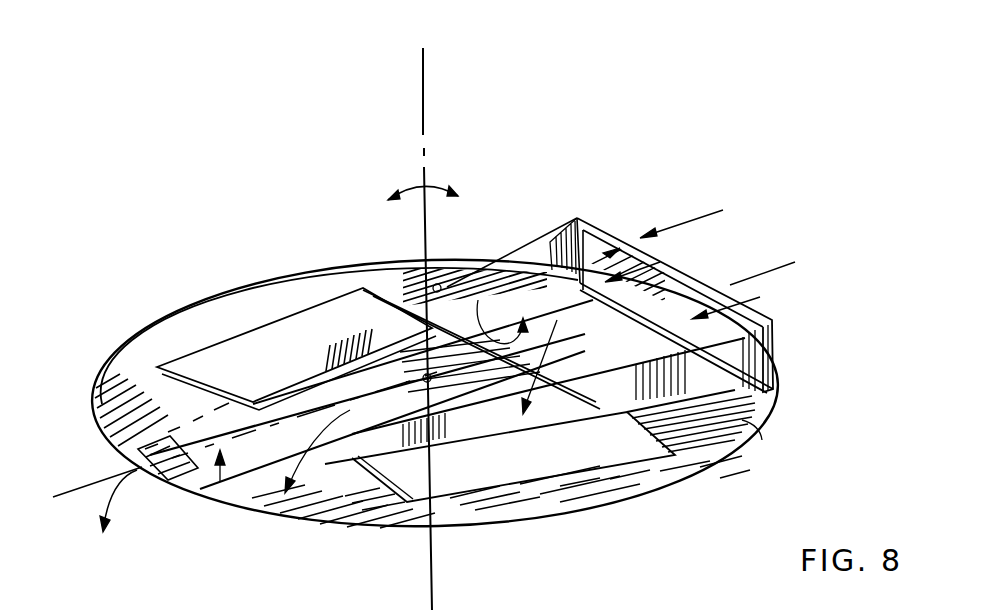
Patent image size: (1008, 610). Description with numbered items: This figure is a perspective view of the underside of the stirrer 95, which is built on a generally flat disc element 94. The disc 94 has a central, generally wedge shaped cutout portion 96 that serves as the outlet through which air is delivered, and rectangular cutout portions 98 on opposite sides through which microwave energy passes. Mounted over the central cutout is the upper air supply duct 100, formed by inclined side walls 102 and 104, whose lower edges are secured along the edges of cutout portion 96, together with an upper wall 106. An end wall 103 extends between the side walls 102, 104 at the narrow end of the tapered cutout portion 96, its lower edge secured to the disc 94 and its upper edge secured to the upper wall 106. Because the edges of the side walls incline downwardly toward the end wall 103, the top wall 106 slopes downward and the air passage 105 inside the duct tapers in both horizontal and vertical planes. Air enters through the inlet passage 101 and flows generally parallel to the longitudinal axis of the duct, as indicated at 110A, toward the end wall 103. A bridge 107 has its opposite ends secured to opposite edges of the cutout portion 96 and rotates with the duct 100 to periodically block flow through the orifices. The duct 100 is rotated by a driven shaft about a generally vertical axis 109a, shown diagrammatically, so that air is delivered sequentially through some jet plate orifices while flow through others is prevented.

The disc element 94 is at (142, 334).
The stirrer 95 is at (714, 483).
The central wedge shaped cutout portion 96 is at (760, 432).
The rectangular cutout portions 98 is at (268, 342).
The upper air supply duct 100 is at (208, 486).
The inlet passage 101 is at (778, 357).
The side wall 102 is at (766, 336).
The end wall 103 is at (140, 455).
The side wall 104 is at (555, 243).
The air passage 105 is at (440, 325).
The upper wall 106 is at (612, 228).
The bridge 107 is at (232, 430).
The vertical axis 109a is at (425, 113).
The flow arrows 110A is at (795, 262).